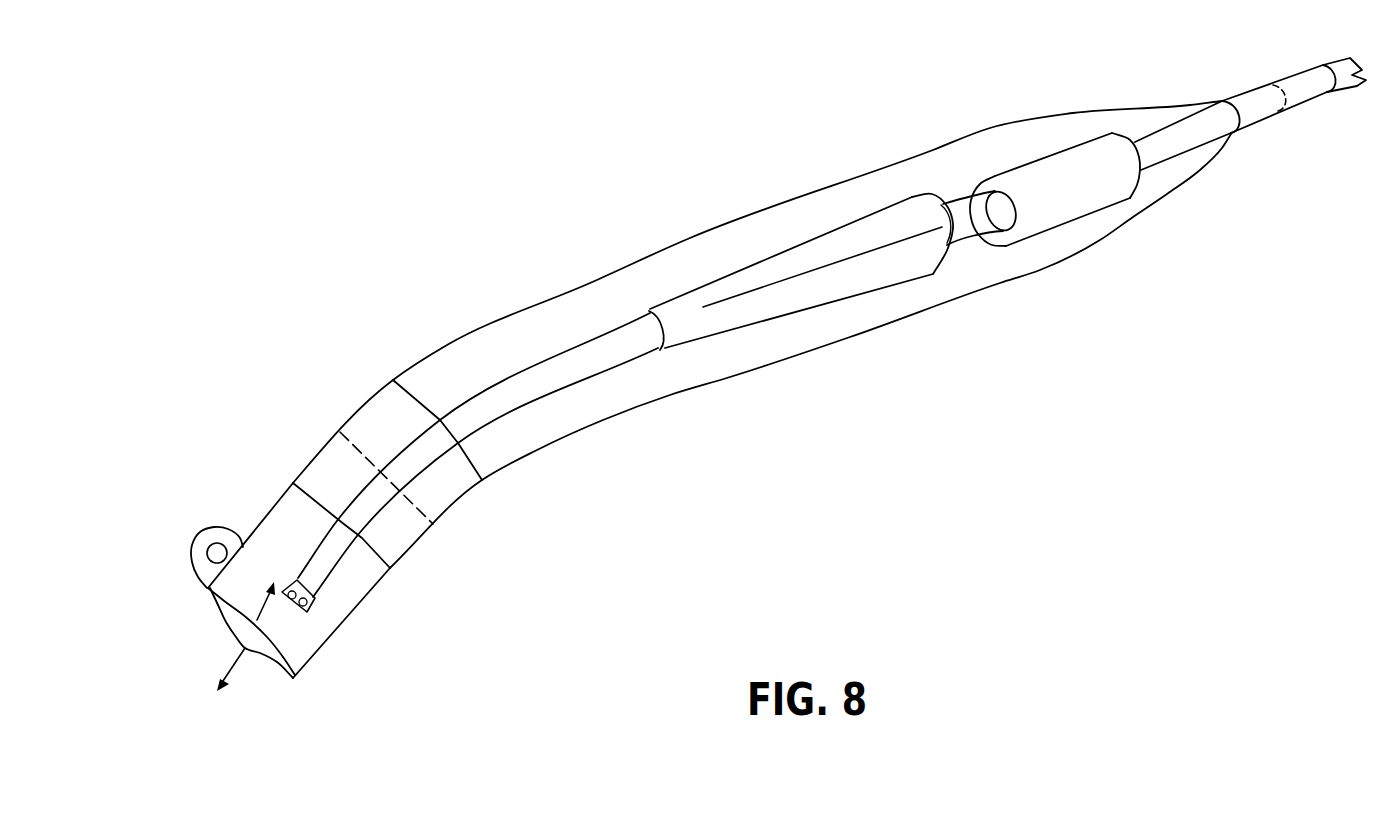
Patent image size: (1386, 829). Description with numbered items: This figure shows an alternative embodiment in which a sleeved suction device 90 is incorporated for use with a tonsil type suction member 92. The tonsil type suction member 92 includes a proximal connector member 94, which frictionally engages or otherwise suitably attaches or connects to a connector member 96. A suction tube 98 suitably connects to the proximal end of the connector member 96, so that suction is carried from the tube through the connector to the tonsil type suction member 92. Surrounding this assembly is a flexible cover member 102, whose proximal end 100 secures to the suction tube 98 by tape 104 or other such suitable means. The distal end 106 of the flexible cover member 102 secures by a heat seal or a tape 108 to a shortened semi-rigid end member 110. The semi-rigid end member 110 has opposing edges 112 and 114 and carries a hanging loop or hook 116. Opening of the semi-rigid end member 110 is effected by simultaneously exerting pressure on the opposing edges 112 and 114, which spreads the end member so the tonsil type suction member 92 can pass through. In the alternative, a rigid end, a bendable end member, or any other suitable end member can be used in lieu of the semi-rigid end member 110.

The sleeved suction device 90 is at (606, 243).
The tonsil type suction member 92 is at (835, 243).
The proximal connector member 94 is at (973, 230).
The connector member 96 is at (1047, 170).
The suction tube 98 is at (1342, 84).
The proximal end 100 is at (1133, 113).
The flexible cover member 102 is at (702, 237).
The tape 104 is at (1255, 100).
The distal end 106 is at (422, 380).
The tape 108 is at (380, 410).
The semi-rigid end member 110 is at (288, 510).
The edge 112 is at (260, 530).
The edge 114 is at (339, 630).
The hanging loop or hook 116 is at (203, 537).